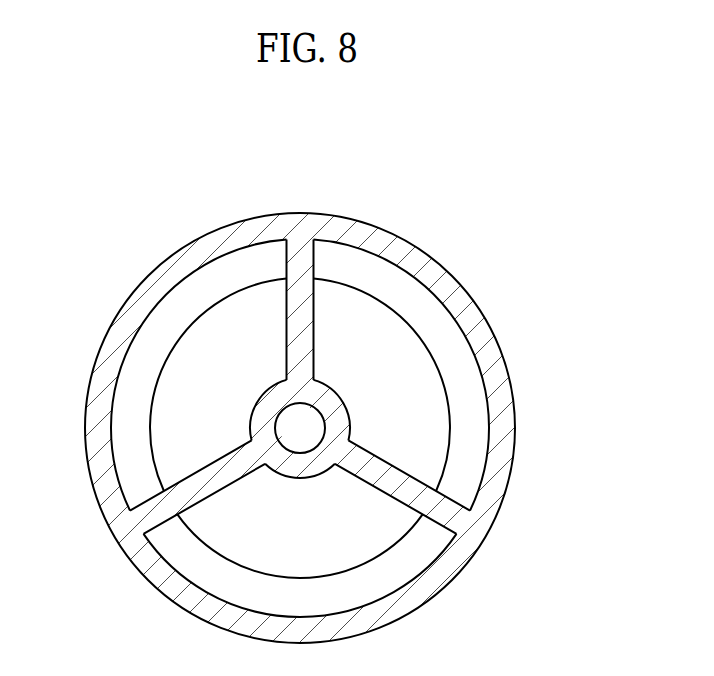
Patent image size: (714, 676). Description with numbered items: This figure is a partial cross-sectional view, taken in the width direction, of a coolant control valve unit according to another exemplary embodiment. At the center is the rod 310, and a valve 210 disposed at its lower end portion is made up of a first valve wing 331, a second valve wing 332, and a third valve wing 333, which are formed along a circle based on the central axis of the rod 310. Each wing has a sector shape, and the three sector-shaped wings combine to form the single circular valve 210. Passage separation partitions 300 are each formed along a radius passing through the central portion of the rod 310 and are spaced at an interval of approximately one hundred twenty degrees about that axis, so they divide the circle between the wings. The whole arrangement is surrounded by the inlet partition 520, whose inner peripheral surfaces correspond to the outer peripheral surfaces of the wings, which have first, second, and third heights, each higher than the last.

The passage separation partition 300 is at (310, 302).
The rod 310 is at (290, 425).
The inlet partition 520 is at (175, 308).
The valve 210 is at (401, 428).
The first valve wing 331 is at (355, 520).
The second valve wing 332 is at (417, 420).
The third valve wing 333 is at (248, 350).